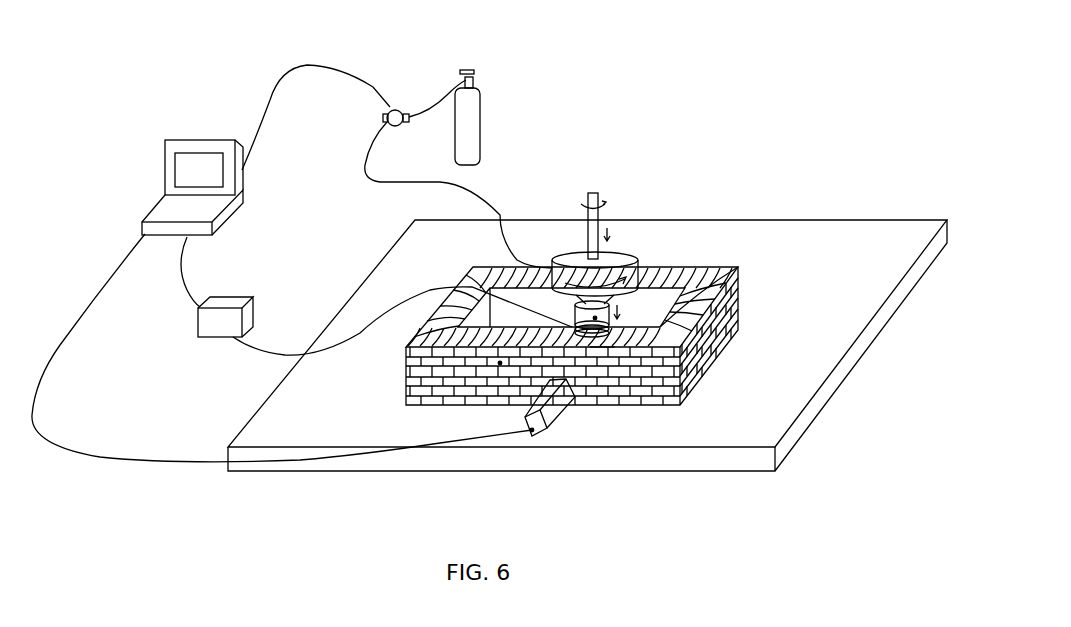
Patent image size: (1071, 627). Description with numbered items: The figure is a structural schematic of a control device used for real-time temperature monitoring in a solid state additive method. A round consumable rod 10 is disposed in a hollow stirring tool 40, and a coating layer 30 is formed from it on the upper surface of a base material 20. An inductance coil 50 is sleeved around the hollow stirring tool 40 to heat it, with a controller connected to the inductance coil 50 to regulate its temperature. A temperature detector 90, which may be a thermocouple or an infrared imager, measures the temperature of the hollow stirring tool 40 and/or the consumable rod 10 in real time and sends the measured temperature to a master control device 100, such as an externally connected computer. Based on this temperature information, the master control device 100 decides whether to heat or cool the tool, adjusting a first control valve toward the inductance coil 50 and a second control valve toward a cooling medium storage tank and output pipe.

The consumable rod 10 is at (608, 341).
The base material 20 is at (825, 240).
The coating layer 30 is at (715, 270).
The hollow stirring tool 40 is at (603, 350).
The inductance coil 50 is at (572, 327).
The temperature detector 90 is at (532, 430).
The master control device 100 is at (208, 147).